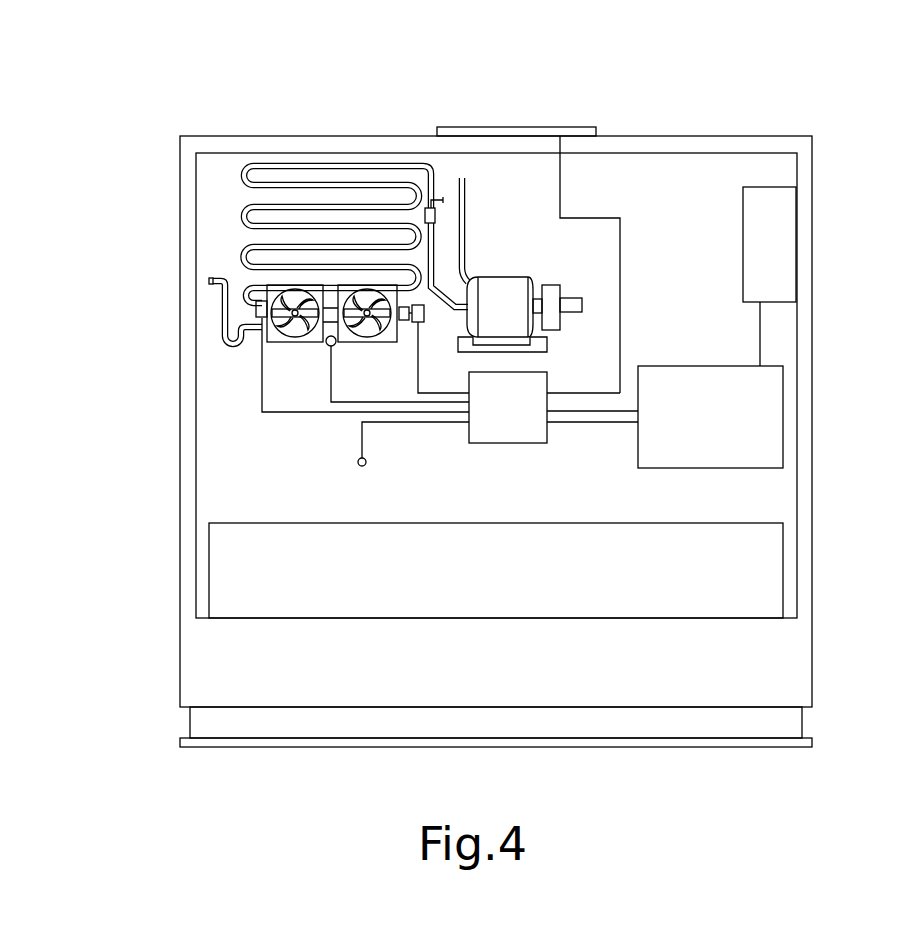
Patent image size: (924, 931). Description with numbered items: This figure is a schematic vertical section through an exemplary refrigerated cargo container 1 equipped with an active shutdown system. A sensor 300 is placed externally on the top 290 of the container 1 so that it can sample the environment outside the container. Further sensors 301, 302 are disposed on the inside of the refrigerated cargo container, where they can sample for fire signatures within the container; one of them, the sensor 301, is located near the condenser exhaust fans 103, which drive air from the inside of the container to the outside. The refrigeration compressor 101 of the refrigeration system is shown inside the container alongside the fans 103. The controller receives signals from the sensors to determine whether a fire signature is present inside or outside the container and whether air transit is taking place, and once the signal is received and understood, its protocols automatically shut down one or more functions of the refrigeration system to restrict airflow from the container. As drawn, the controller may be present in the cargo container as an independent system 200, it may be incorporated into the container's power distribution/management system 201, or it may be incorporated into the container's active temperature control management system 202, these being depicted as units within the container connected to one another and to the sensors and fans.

The container 1 is at (802, 92).
The top 290 is at (636, 132).
The sensor 300 is at (455, 122).
The refrigeration compressor 101 is at (493, 284).
The condenser exhaust fans 103 is at (373, 288).
The independent system 200 is at (786, 228).
The power distribution/management system 201 is at (786, 413).
The active temperature control management system 202 is at (525, 447).
The sensor 301 is at (322, 349).
The sensor 302 is at (357, 466).